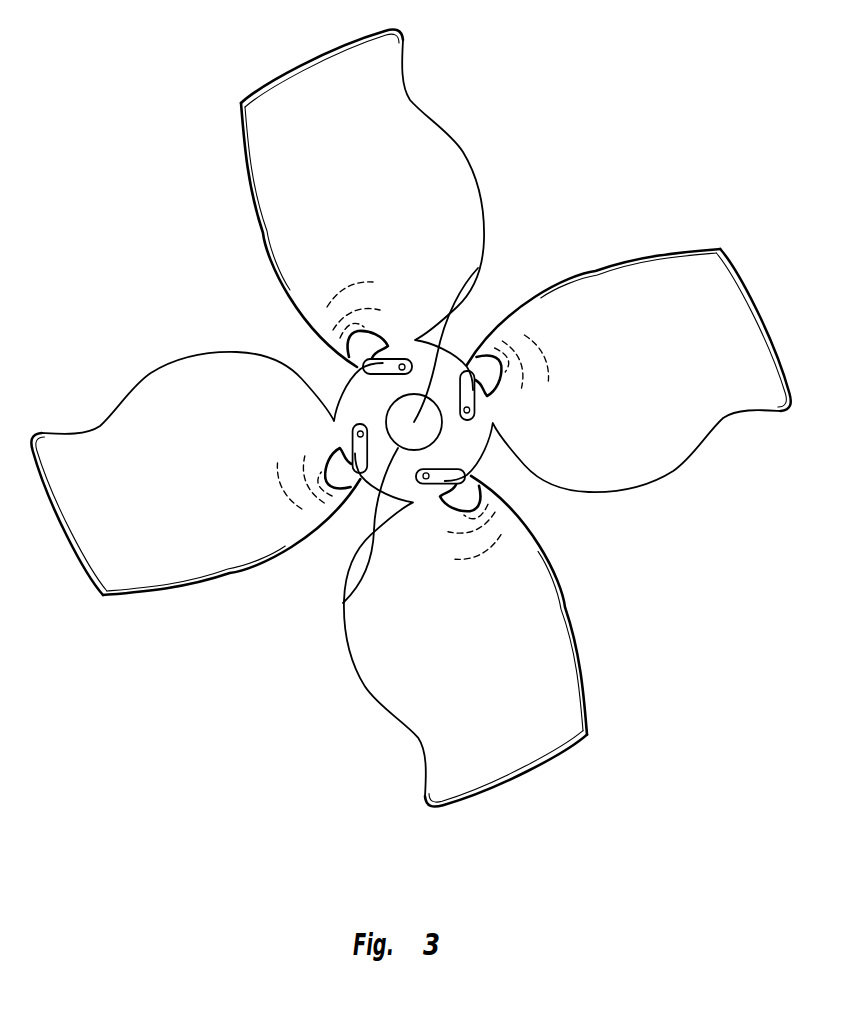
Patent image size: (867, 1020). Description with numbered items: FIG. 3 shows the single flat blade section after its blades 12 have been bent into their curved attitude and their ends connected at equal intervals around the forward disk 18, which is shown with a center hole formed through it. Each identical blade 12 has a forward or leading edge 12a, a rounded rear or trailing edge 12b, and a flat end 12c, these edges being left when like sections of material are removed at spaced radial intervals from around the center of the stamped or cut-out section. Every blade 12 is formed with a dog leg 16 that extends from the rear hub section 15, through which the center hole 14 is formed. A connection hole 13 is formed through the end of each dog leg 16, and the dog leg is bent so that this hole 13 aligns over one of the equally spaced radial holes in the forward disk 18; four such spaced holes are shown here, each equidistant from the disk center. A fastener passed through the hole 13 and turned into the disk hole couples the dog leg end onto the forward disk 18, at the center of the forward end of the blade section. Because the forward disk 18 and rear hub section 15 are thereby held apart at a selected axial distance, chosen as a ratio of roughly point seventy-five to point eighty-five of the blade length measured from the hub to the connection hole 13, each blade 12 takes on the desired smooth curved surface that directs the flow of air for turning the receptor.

The blade 12 is at (410, 418).
The leading edge 12a is at (247, 168).
The trailing edge 12b is at (478, 176).
The flat end 12c is at (275, 76).
The end hole 13 is at (402, 362).
The center hole 14 is at (352, 601).
The rear hub section 15 is at (474, 273).
The dog leg 16 is at (352, 366).
The forward disk 18 is at (472, 451).